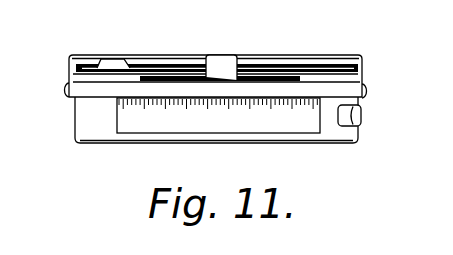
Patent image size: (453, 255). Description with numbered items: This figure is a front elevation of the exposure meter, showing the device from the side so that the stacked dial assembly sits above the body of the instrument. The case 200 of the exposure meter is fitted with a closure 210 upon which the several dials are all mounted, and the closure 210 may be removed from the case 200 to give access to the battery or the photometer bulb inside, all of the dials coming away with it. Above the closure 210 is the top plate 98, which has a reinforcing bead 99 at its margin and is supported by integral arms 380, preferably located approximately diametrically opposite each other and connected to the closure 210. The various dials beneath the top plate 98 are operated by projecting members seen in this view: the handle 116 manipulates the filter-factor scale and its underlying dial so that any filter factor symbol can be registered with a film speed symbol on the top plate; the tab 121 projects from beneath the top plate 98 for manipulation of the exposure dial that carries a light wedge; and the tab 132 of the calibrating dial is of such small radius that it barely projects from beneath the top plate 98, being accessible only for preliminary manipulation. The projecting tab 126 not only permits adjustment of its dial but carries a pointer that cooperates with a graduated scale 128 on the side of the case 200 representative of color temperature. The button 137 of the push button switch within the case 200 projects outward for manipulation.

The top plate 98 is at (308, 53).
The reinforcing bead 99 is at (345, 56).
The handle 116 is at (218, 55).
The tab 121 is at (115, 65).
The projecting tab 126 is at (325, 76).
The graduated scale 128 is at (307, 129).
The tab 132 is at (243, 66).
The button 137 is at (356, 119).
The case 200 is at (82, 133).
The closure 210 is at (97, 87).
The integral arms 380 is at (72, 72).